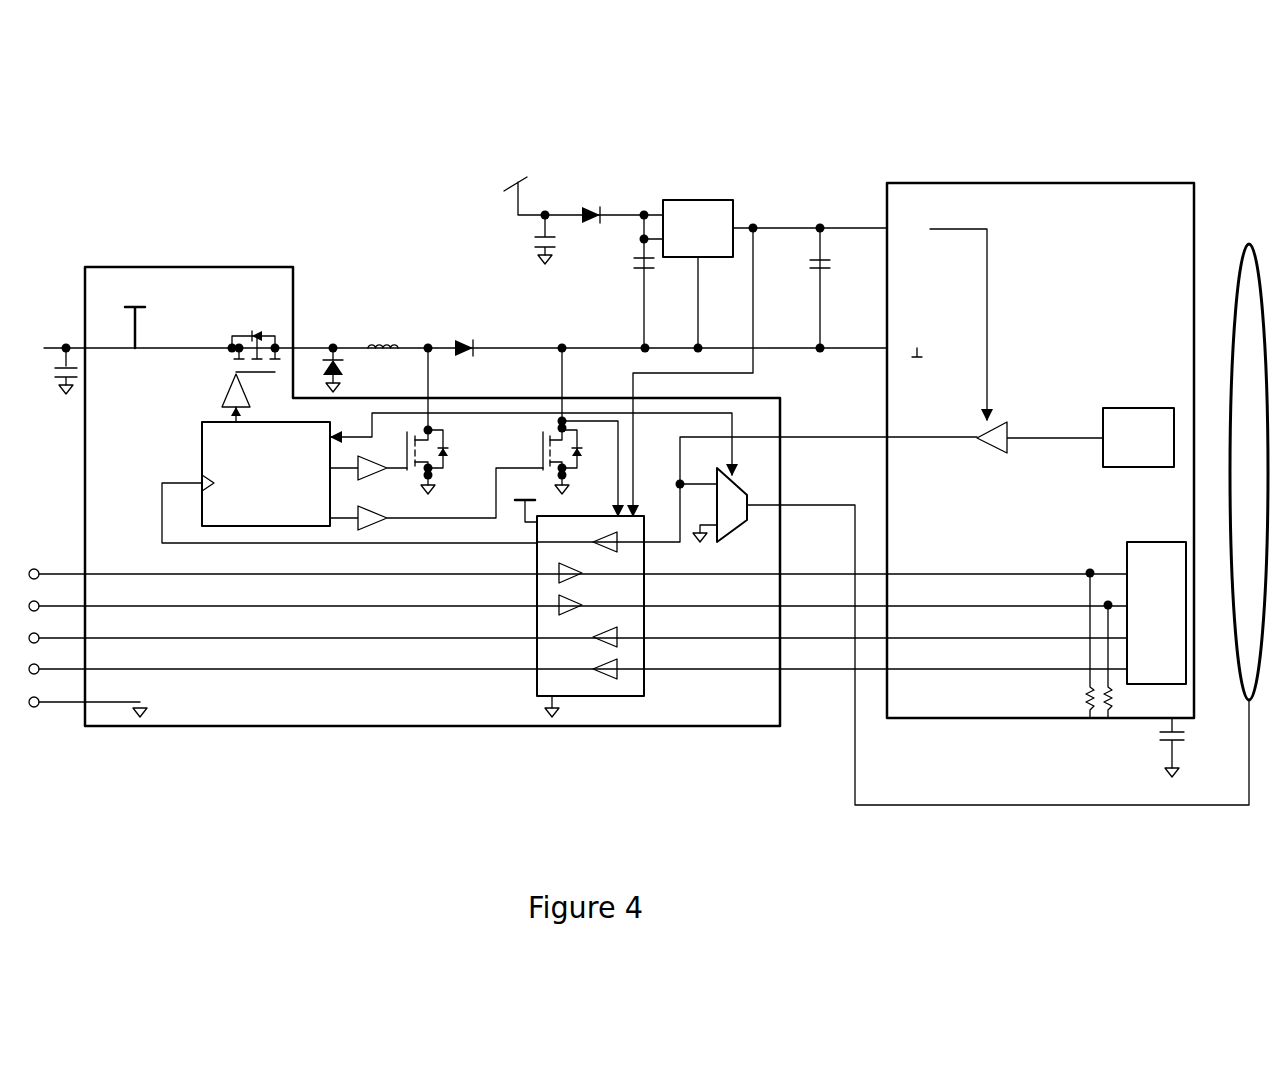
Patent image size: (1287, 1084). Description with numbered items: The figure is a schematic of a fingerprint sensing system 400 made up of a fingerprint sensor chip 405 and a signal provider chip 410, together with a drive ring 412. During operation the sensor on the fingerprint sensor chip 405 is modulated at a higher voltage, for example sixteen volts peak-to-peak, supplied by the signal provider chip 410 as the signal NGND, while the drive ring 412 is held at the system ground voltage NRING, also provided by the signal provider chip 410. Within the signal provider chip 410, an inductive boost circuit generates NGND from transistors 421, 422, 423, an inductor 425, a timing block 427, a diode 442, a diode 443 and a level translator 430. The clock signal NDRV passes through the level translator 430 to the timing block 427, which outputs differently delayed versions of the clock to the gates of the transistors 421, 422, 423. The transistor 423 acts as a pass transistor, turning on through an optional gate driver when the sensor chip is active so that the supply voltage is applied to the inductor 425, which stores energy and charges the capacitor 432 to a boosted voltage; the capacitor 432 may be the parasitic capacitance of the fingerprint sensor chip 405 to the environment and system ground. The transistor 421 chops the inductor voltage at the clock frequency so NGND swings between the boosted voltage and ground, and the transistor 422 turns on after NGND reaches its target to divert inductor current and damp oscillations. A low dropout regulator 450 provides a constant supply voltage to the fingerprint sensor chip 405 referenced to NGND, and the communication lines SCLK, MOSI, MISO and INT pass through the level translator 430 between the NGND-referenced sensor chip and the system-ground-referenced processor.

The fingerprint sensing system 400 is at (1141, 91).
The signal provider chip 410 is at (244, 267).
The fingerprint sensor chip 405 is at (1018, 718).
The drive ring 412 is at (1249, 472).
The transistor 421 is at (535, 439).
The transistor 422 is at (404, 475).
The transistor 423 is at (238, 332).
The inductor 425 is at (400, 345).
The timing block 427 is at (266, 474).
The level translator 430 is at (644, 688).
The capacitor 432 is at (1162, 748).
The diode 442 is at (345, 375).
The diode 443 is at (466, 338).
The low dropout regulator 450 is at (733, 205).